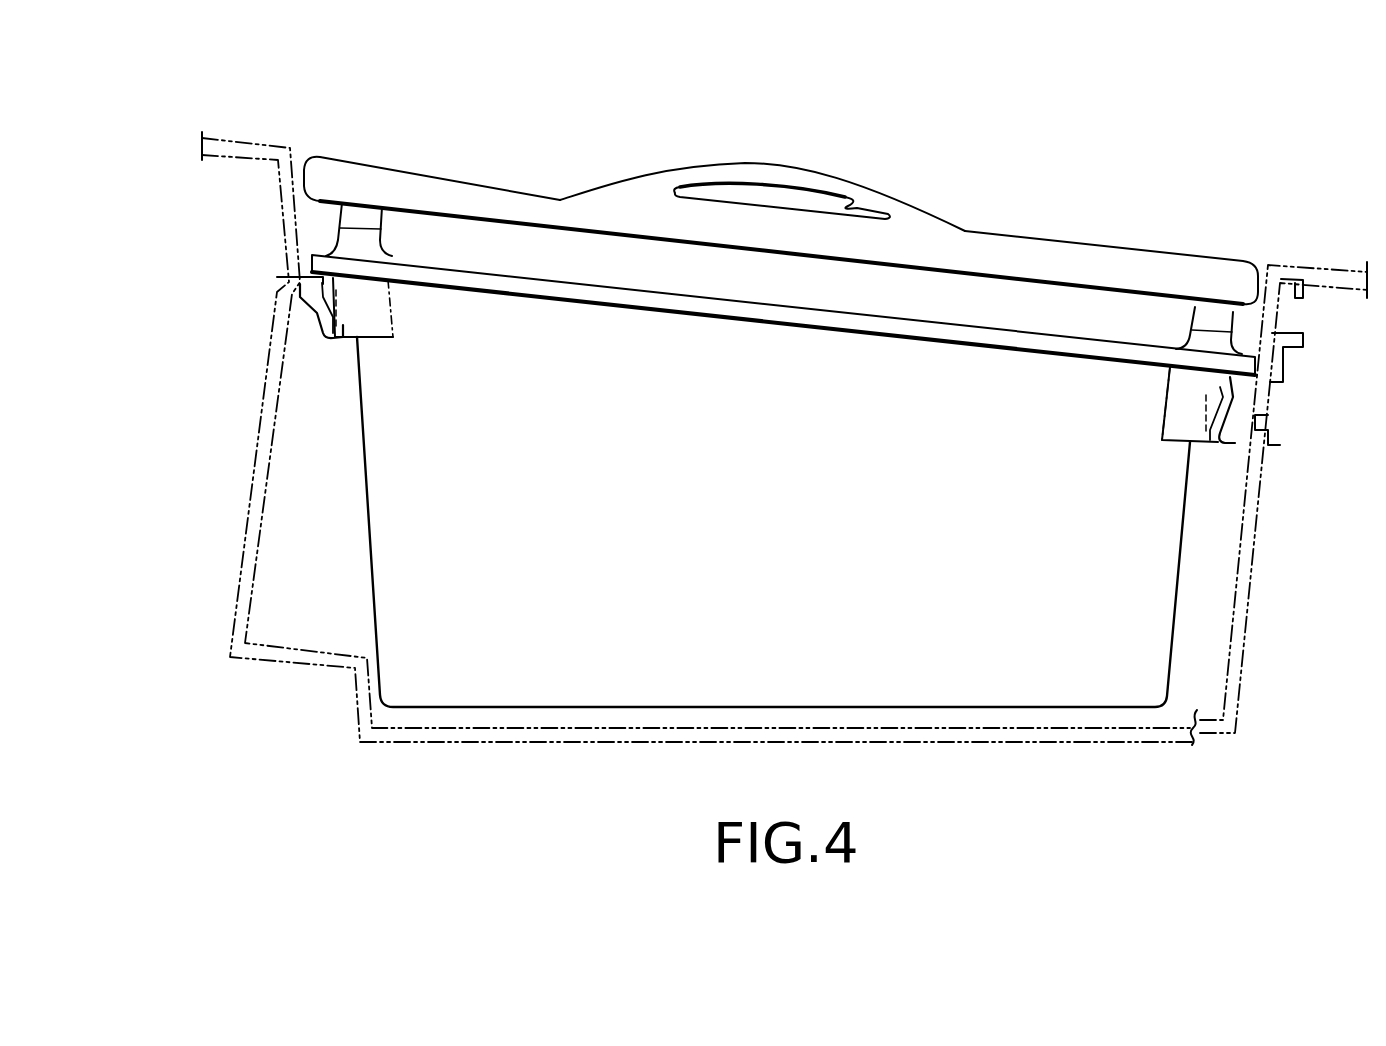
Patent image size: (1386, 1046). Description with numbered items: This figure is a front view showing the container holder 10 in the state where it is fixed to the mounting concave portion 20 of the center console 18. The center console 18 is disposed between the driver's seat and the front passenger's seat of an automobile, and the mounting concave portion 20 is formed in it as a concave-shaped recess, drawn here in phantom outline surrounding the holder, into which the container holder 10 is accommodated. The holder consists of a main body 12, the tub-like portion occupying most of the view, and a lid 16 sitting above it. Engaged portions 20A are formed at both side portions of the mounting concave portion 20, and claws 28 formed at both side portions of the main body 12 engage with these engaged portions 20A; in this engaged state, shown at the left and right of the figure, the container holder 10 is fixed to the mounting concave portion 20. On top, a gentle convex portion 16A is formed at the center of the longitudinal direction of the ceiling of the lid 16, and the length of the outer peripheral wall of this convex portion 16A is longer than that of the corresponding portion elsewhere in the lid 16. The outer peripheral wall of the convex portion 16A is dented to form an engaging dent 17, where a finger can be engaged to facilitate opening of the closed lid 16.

The container holder 10 is at (1055, 180).
The main body 12 is at (1177, 608).
The lid 16 is at (1075, 268).
The convex portion 16A is at (812, 166).
The engaging dent 17 is at (853, 205).
The center console 18 is at (1310, 270).
The mounting concave portion 20 is at (1243, 512).
The engaged portions 20A is at (303, 281).
The claws 28 is at (305, 318).